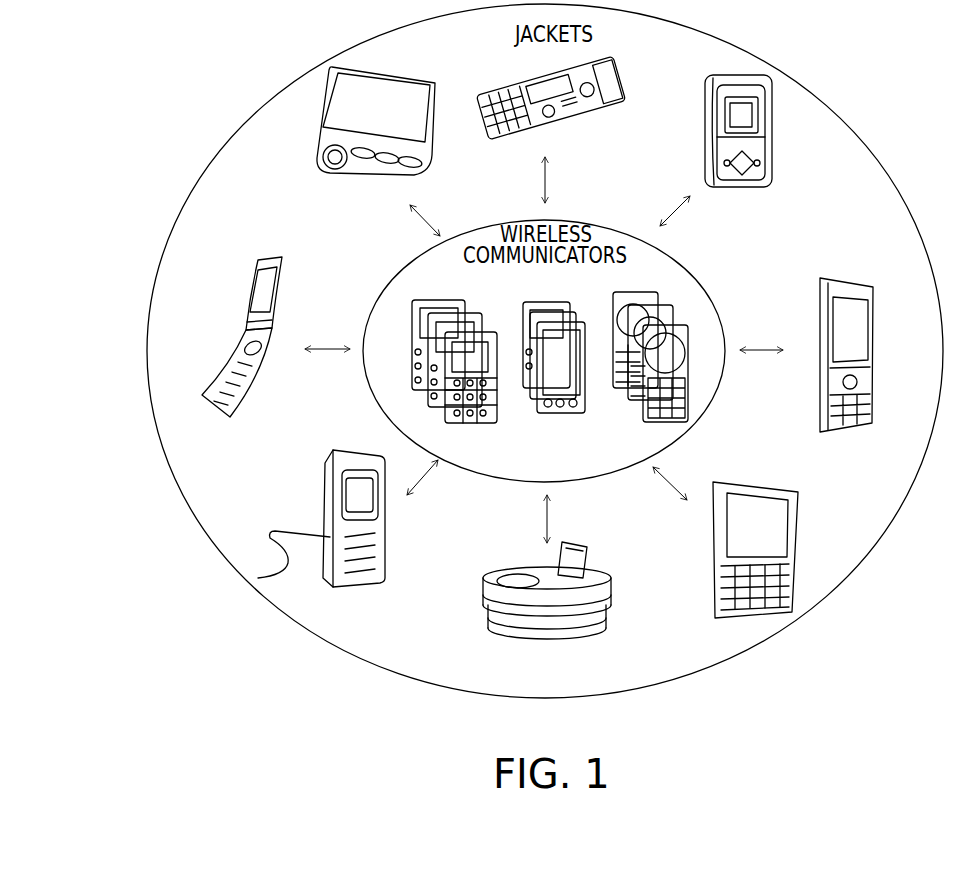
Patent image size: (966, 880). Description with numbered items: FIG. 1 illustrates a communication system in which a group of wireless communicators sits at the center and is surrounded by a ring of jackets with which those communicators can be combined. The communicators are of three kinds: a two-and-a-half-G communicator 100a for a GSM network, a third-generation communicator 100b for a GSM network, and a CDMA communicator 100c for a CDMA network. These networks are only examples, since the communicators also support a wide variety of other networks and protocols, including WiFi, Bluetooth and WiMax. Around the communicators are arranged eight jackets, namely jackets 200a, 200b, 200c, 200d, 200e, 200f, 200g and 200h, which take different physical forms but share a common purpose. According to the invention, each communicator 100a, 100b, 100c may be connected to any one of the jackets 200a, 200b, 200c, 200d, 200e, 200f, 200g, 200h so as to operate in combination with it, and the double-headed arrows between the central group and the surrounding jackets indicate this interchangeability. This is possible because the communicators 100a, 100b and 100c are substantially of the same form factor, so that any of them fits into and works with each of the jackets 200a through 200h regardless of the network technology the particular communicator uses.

The 2.5G communicator 100a is at (486, 425).
The 3G communicator 100b is at (552, 415).
The CDMA communicator 100c is at (627, 405).
The jacket 200a is at (605, 105).
The jacket 200b is at (770, 163).
The jacket 200c is at (877, 342).
The jacket 200d is at (802, 512).
The jacket 200e is at (595, 558).
The jacket 200f is at (387, 527).
The jacket 200g is at (283, 293).
The jacket 200h is at (437, 163).